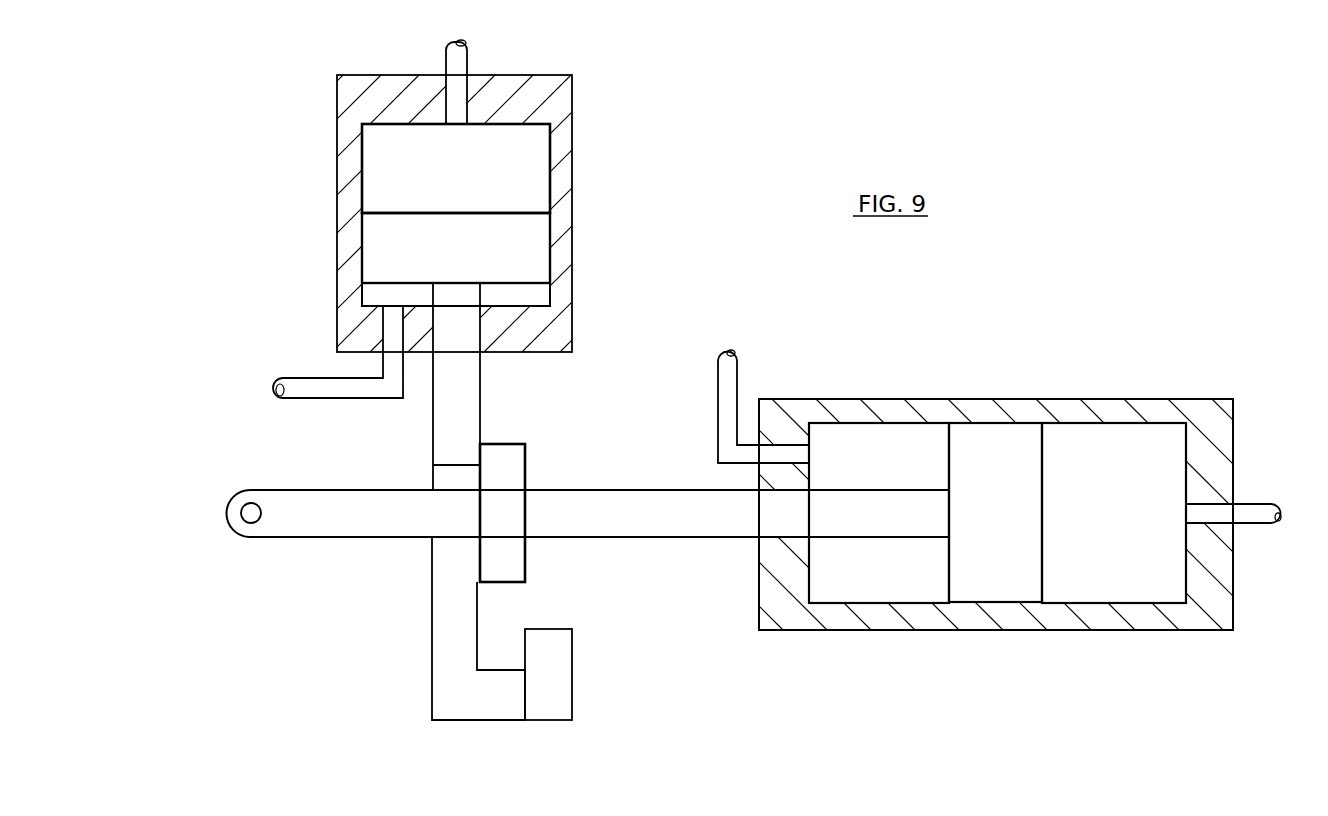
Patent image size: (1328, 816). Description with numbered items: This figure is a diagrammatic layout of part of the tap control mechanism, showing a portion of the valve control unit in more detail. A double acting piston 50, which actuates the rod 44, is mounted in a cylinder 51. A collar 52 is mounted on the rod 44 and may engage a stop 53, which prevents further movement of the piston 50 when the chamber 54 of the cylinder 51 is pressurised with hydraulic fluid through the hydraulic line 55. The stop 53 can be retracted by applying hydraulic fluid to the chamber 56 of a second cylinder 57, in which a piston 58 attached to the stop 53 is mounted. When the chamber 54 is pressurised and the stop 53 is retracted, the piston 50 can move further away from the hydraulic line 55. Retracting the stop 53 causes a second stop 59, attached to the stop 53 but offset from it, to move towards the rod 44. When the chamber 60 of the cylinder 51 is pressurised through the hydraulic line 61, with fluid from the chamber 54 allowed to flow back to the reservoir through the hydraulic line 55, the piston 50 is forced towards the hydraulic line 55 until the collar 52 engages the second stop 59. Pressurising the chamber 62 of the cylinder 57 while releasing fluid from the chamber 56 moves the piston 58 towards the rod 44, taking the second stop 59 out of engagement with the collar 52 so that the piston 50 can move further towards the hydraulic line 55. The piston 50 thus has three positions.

The rod 44 is at (650, 520).
The double acting piston 50 is at (975, 553).
The cylinder 51 is at (1115, 610).
The collar 52 is at (502, 455).
The stop 53 is at (461, 405).
The chamber 54 is at (1135, 468).
The hydraulic line 55 is at (1260, 513).
The chamber 56 is at (385, 295).
The cylinder 57 is at (357, 195).
The piston 58 is at (392, 240).
The second stop 59 is at (552, 640).
The chamber 60 is at (919, 457).
The hydraulic line 61 is at (727, 377).
The chamber 62 is at (385, 138).